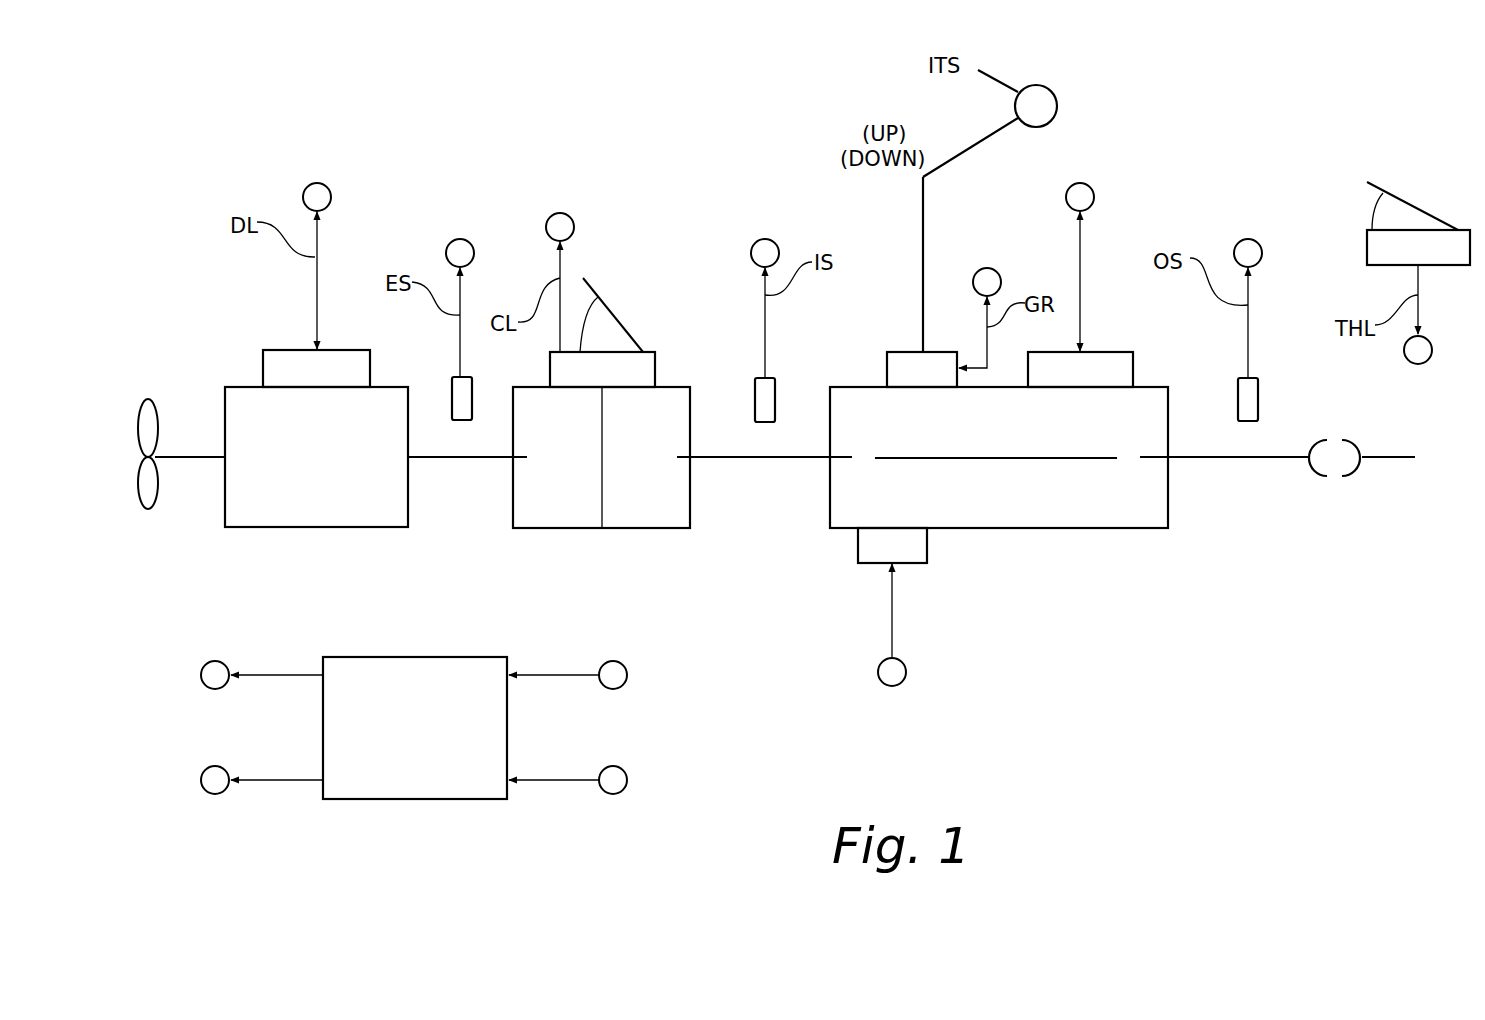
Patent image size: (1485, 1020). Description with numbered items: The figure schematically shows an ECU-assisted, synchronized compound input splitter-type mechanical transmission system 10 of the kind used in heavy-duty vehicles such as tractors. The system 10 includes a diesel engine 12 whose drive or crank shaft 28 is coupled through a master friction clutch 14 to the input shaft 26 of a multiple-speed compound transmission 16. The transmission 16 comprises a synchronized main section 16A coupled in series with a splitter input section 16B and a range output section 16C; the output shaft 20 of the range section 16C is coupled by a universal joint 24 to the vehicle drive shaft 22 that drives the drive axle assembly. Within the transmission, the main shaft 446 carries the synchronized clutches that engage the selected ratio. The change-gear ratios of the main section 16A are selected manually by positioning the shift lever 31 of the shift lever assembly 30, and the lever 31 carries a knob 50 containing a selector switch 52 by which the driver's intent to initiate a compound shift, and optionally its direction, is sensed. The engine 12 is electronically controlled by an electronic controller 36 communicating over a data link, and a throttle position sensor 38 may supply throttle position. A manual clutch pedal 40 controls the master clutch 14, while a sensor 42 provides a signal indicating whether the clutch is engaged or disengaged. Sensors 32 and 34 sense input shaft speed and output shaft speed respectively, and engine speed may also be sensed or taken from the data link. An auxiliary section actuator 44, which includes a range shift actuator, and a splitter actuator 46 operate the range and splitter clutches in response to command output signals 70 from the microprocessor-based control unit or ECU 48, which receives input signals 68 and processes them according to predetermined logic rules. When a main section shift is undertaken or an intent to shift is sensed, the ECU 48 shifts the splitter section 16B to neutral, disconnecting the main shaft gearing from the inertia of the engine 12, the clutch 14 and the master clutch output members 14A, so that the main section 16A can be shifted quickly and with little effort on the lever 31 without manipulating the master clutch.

The vehicular transmission system 10 is at (793, 148).
The diesel engine 12 is at (297, 496).
The master friction clutch 14 is at (570, 542).
The master clutch output members 14A is at (643, 518).
The compound transmission 16 is at (855, 500).
The synchronized main section 16A is at (1028, 512).
The splitter input section 16B is at (893, 523).
The range output section 16C is at (1135, 500).
The output shaft 20 is at (1248, 459).
The vehicle drive shaft 22 is at (1397, 459).
The universal joint 24 is at (1335, 478).
The input shaft 26 is at (770, 459).
The crank shaft 28 is at (478, 460).
The shift lever assembly 30 is at (945, 213).
The shift lever 31 is at (452, 392).
The input shaft speed sensor 32 is at (775, 397).
The output shaft speed sensor 34 is at (1238, 400).
The electronic engine controller 36 is at (290, 355).
The throttle position sensor 38 is at (1367, 248).
The manual clutch pedal 40 is at (600, 290).
The clutch sensor 42 is at (651, 365).
The auxiliary section actuator 44 is at (1105, 365).
The main shaft 446 is at (977, 457).
The splitter actuator 46 is at (858, 550).
The ECU 48 is at (405, 755).
The shift knob 50 is at (1057, 115).
The selector switch 52 is at (1000, 78).
The input signals 68 is at (571, 814).
The command output signals 70 is at (268, 814).